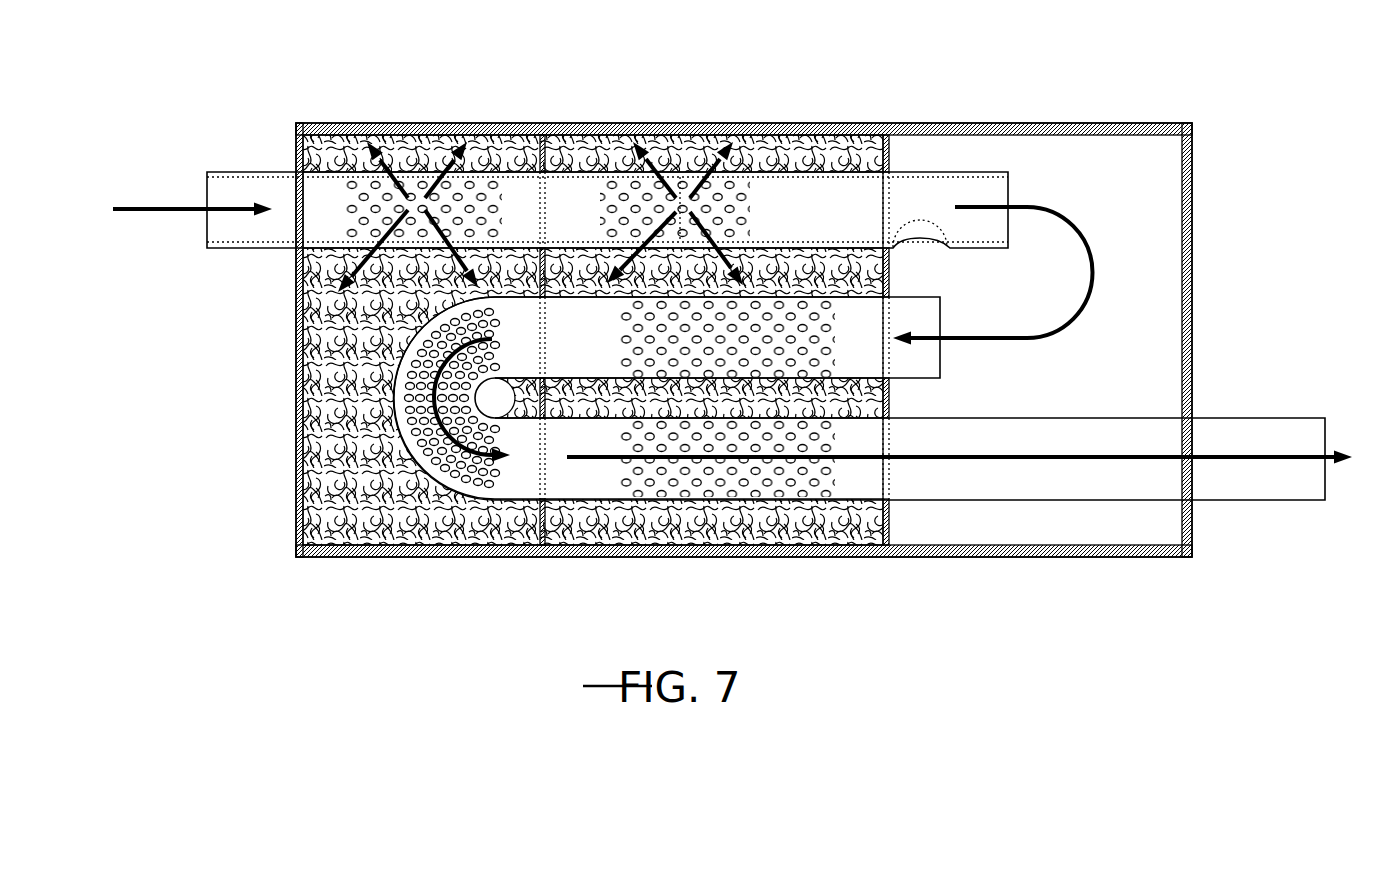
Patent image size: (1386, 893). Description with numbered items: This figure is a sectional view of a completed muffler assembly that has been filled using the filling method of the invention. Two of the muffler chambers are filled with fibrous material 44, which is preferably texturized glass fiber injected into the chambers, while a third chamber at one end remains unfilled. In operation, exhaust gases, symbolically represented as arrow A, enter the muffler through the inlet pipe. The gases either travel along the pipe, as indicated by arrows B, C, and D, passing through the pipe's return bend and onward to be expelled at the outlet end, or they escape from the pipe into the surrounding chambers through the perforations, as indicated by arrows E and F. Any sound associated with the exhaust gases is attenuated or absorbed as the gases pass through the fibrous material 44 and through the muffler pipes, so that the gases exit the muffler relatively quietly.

The fibrous material 44 is at (372, 505).
The exhaust gas inflow arrow A is at (145, 209).
The exhaust gas travel arrow B is at (1082, 236).
The exhaust gas travel arrow C is at (385, 380).
The exhaust gas travel arrow D is at (1275, 454).
The exhaust gas escape arrow E is at (447, 168).
The exhaust gas escape arrow F is at (657, 167).